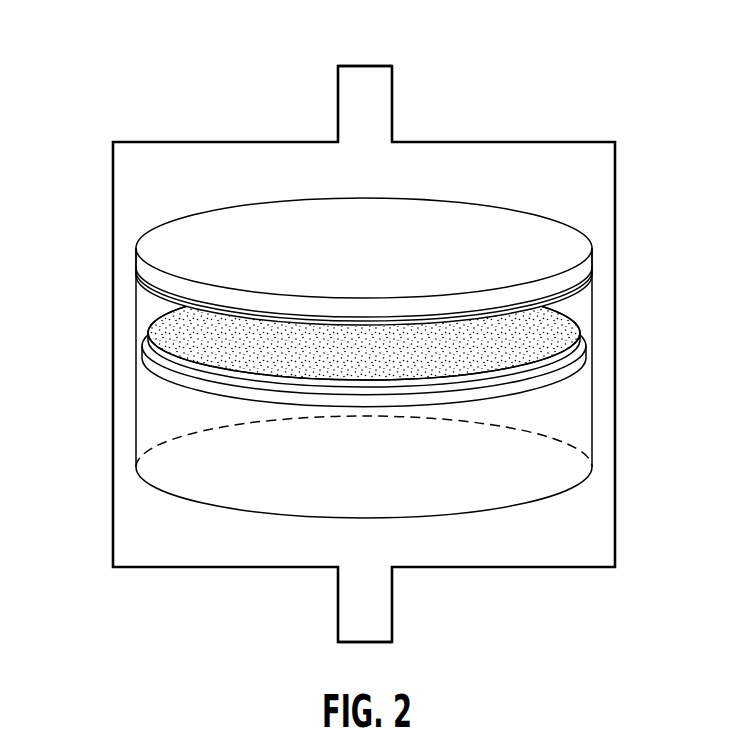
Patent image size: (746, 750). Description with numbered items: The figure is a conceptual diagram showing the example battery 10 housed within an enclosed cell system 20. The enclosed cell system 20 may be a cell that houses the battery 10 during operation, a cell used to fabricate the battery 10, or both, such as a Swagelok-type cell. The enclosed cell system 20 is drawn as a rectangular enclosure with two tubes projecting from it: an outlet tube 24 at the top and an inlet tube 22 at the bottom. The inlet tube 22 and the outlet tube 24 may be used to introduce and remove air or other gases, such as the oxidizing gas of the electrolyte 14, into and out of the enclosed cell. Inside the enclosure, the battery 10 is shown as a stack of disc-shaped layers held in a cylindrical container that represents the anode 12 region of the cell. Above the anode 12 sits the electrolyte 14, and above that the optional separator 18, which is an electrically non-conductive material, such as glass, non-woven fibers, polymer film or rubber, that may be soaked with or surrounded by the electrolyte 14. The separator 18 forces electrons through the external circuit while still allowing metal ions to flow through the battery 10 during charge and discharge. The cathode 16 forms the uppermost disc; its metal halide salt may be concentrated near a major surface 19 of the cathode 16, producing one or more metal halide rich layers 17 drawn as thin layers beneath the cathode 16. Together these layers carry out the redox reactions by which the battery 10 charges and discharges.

The enclosed cell system 20 is at (176, 83).
The battery 10 is at (353, 324).
The anode 12 is at (570, 405).
The electrolyte 14 is at (583, 350).
The cathode 16 is at (583, 270).
The metal halide rich layer 17 is at (577, 297).
The separator 18 is at (172, 327).
The major surface of the cathode 19 is at (563, 303).
The inlet tube 22 is at (370, 602).
The outlet tube 24 is at (370, 103).